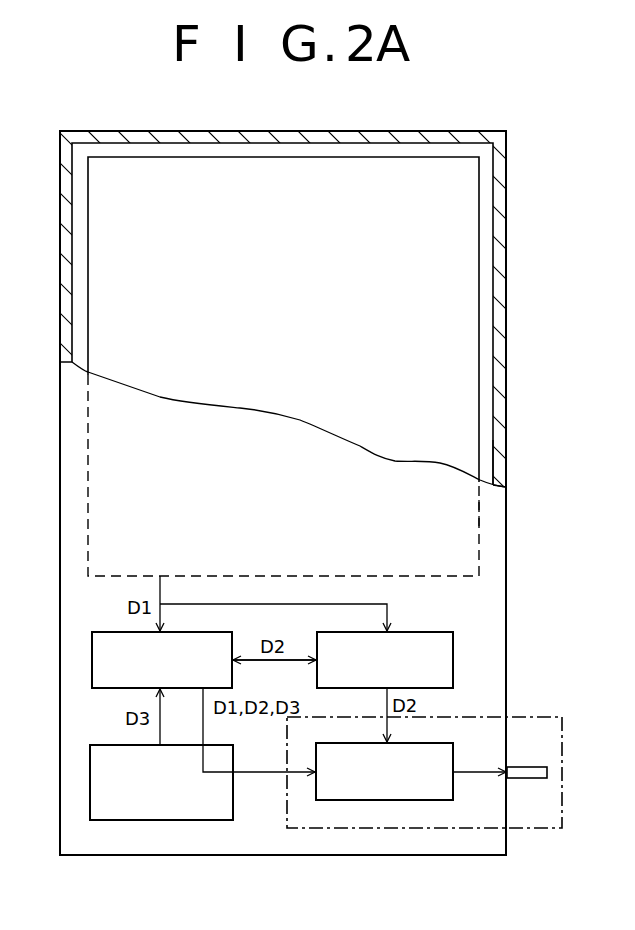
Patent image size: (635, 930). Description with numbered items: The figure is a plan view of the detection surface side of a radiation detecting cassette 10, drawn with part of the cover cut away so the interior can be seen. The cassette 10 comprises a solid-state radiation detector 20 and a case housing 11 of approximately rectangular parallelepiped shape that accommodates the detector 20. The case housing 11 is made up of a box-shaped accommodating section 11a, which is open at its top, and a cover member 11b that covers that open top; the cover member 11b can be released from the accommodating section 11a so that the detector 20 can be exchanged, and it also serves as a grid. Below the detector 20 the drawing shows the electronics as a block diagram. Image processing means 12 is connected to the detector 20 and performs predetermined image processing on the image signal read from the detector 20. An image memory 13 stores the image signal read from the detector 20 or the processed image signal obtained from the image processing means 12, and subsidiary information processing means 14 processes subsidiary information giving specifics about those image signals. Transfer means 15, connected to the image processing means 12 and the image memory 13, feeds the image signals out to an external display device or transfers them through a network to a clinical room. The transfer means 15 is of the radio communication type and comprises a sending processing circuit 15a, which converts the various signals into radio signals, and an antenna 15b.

The radiation detecting cassette 10 is at (489, 118).
The solid-state radiation detector 20 is at (470, 217).
The case housing 11 is at (556, 446).
The accommodating section 11a is at (503, 463).
The cover member 11b is at (497, 507).
The image processing means 12 is at (440, 631).
The image memory 13 is at (117, 631).
The subsidiary information processing means 14 is at (117, 745).
The transfer means 15 is at (532, 716).
The sending processing circuit 15a is at (471, 734).
The antenna 15b is at (527, 779).